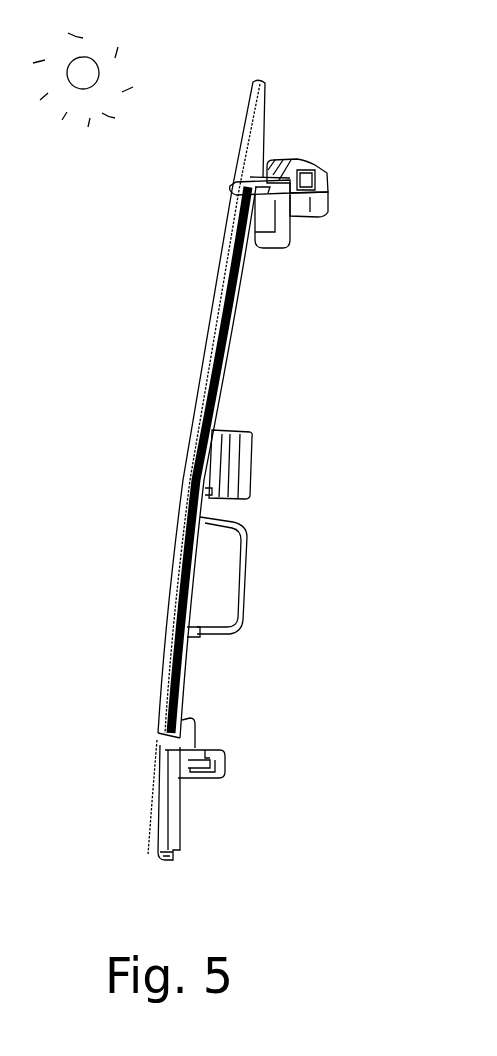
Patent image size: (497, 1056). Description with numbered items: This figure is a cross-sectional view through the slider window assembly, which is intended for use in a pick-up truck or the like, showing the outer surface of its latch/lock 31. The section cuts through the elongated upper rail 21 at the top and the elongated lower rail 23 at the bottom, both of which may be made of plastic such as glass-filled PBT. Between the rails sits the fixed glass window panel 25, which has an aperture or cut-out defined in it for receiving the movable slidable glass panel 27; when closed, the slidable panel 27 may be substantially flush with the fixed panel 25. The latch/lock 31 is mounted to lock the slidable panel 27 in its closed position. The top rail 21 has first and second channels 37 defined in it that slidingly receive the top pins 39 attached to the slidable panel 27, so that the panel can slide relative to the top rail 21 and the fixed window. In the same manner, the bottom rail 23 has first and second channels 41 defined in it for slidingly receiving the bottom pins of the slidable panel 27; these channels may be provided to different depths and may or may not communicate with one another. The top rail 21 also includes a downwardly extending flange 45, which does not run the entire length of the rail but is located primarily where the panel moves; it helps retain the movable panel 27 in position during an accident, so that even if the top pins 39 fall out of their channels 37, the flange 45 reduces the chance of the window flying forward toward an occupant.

The upper rail 21 is at (265, 132).
The lower rail 23 is at (178, 805).
The fixed glass window panel 25 is at (137, 896).
The slidable glass panel 27 is at (182, 513).
The latch/lock 31 is at (250, 470).
The channels of the top rail 37 is at (302, 236).
The top pins 39 is at (233, 190).
The channels of the bottom rail 41 is at (208, 746).
The downwardly extending flange 45 is at (327, 207).